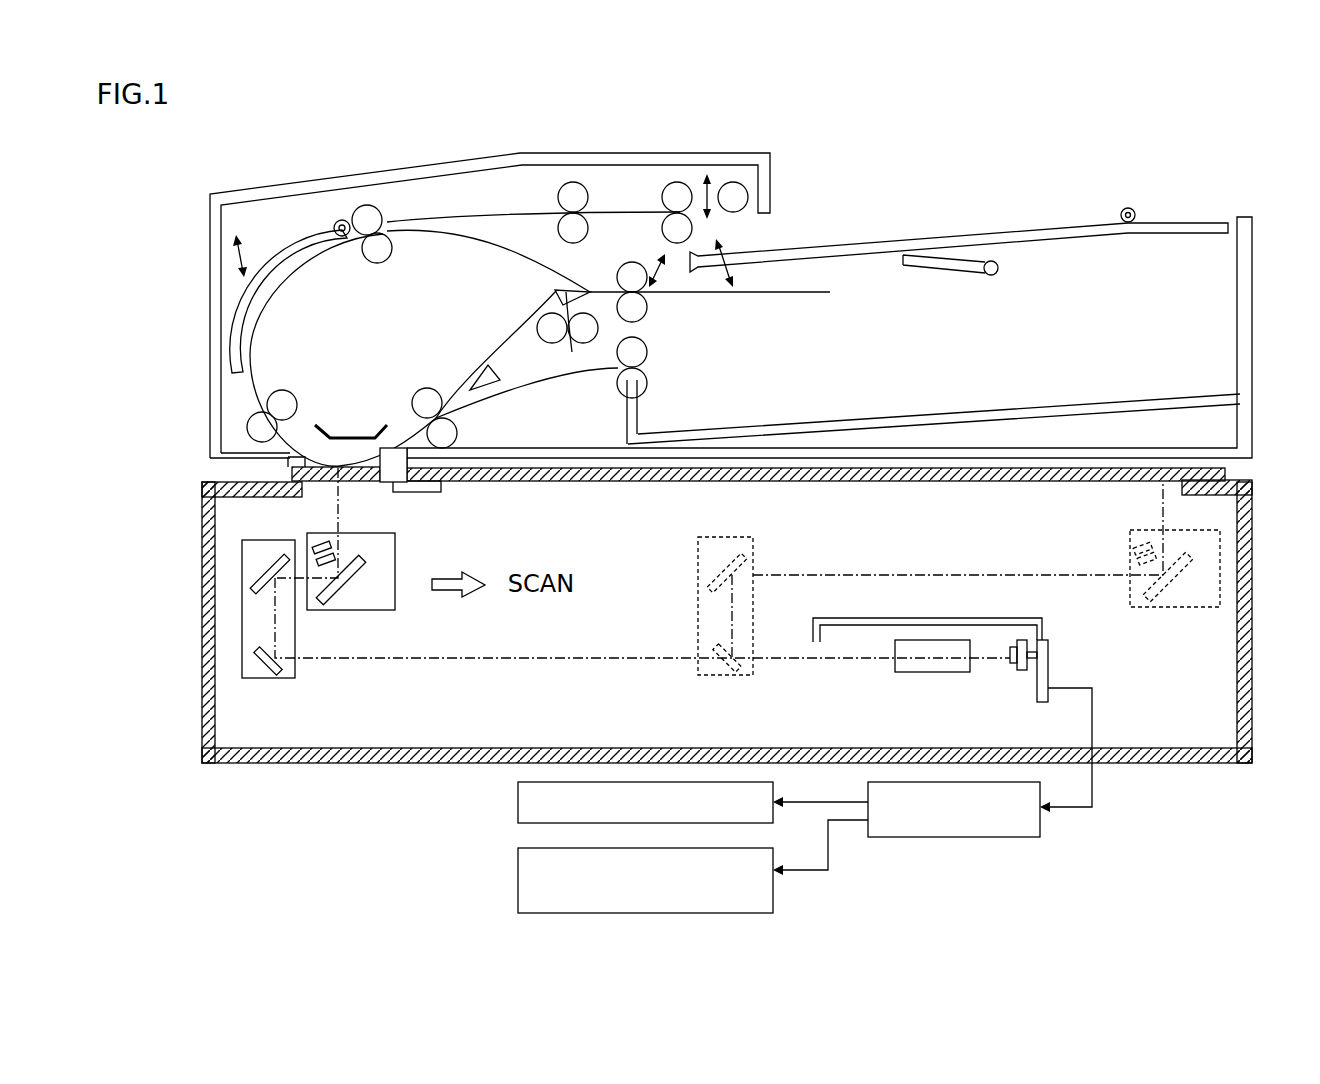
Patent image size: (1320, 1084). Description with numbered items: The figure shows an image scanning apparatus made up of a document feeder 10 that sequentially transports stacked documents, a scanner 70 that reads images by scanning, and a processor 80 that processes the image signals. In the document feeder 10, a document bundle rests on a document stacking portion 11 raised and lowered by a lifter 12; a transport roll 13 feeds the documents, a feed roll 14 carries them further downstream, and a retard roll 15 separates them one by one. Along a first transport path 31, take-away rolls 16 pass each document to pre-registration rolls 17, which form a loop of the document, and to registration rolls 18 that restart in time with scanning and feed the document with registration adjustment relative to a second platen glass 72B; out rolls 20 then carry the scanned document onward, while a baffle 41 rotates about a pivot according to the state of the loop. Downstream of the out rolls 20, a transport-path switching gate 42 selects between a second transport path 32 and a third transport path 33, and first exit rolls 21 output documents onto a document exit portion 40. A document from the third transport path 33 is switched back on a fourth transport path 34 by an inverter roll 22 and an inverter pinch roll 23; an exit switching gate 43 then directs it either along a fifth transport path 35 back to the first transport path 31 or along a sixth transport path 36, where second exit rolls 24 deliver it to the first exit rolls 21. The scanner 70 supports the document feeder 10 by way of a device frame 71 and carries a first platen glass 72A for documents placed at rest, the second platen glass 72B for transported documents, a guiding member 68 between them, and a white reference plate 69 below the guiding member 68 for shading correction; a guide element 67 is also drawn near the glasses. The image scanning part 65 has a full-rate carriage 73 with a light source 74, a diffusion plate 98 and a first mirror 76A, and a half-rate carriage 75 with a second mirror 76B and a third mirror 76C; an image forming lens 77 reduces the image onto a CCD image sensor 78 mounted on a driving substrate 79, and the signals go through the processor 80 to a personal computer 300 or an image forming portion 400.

The document feeder 10 is at (946, 167).
The document stacking portion 11 is at (852, 252).
The lifter 12 is at (945, 272).
The transport roll 13 is at (750, 197).
The feed roll 14 is at (676, 182).
The retard roll 15 is at (703, 226).
The take-away rolls 16 is at (553, 185).
The pre-registration rolls 17 is at (354, 248).
The registration rolls 18 is at (308, 394).
The out rolls 20 is at (441, 388).
The first exit rolls 21 is at (652, 364).
The inverter roll 22 is at (650, 308).
The inverter pinch roll 23 is at (633, 262).
The second exit rolls 24 is at (536, 349).
The first transport path 31 is at (487, 222).
The second transport path 32 is at (578, 352).
The third transport path 33 is at (498, 323).
The fourth transport path 34 is at (782, 294).
The fifth transport path 35 is at (513, 277).
The sixth transport path 36 is at (572, 346).
The document exit portion 40 is at (1005, 410).
The baffle 41 is at (284, 247).
The transport-path switching gate 42 is at (490, 378).
The exit switching gate 43 is at (568, 288).
The image scanning part 65 is at (421, 719).
The guide member 67 is at (300, 462).
The guiding member 68 is at (395, 473).
The white reference plate 69 is at (442, 483).
The scanner 70 is at (1197, 789).
The device frame 71 is at (1135, 766).
The first platen glass 72A is at (922, 482).
The second platen glass 72B is at (357, 483).
The full-rate carriage 73 is at (397, 603).
The light source 74 is at (312, 558).
The half-rate carriage 75 is at (296, 670).
The first mirror 76A is at (357, 566).
The second mirror 76B is at (268, 565).
The third mirror 76C is at (262, 664).
The image forming lens 77 is at (912, 673).
The CCD image sensor 78 is at (1008, 672).
The driving substrate 79 is at (1050, 678).
The processor 80 is at (930, 838).
The diffusion plate 98 is at (324, 542).
The personal computer 300 is at (518, 800).
The image forming portion 400 is at (518, 868).